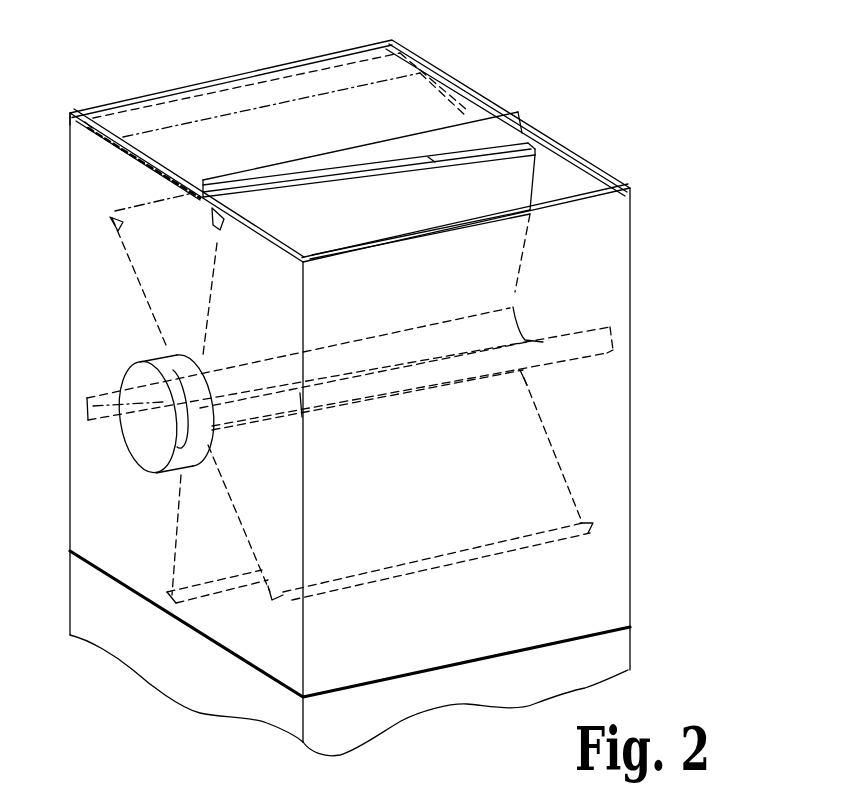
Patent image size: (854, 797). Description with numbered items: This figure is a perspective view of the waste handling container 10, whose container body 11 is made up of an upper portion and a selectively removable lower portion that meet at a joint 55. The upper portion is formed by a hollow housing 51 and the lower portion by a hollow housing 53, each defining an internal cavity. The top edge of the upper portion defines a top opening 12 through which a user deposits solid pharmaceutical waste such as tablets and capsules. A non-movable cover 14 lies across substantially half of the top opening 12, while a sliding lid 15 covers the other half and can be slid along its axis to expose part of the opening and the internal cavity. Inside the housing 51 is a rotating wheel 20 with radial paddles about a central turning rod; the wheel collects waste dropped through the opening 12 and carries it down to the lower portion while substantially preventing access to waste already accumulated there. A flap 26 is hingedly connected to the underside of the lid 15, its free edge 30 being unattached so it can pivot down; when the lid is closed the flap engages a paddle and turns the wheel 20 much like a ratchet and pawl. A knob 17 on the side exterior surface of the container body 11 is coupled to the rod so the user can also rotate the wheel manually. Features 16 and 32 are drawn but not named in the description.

The container 10 is at (680, 172).
The container body 11 is at (672, 420).
The top opening 12 is at (568, 178).
The non-movable cover 14 is at (100, 112).
The sliding lid 15 is at (170, 103).
The top bar 16 is at (469, 115).
The knob 17 is at (130, 452).
The rotating wheel 20 is at (126, 331).
The flap 26 is at (255, 105).
The free edge 30 is at (478, 42).
The rim edge 32 is at (628, 133).
The hollow housing 51 is at (632, 535).
The hollow housing 53 is at (630, 663).
The joint 55 is at (630, 627).